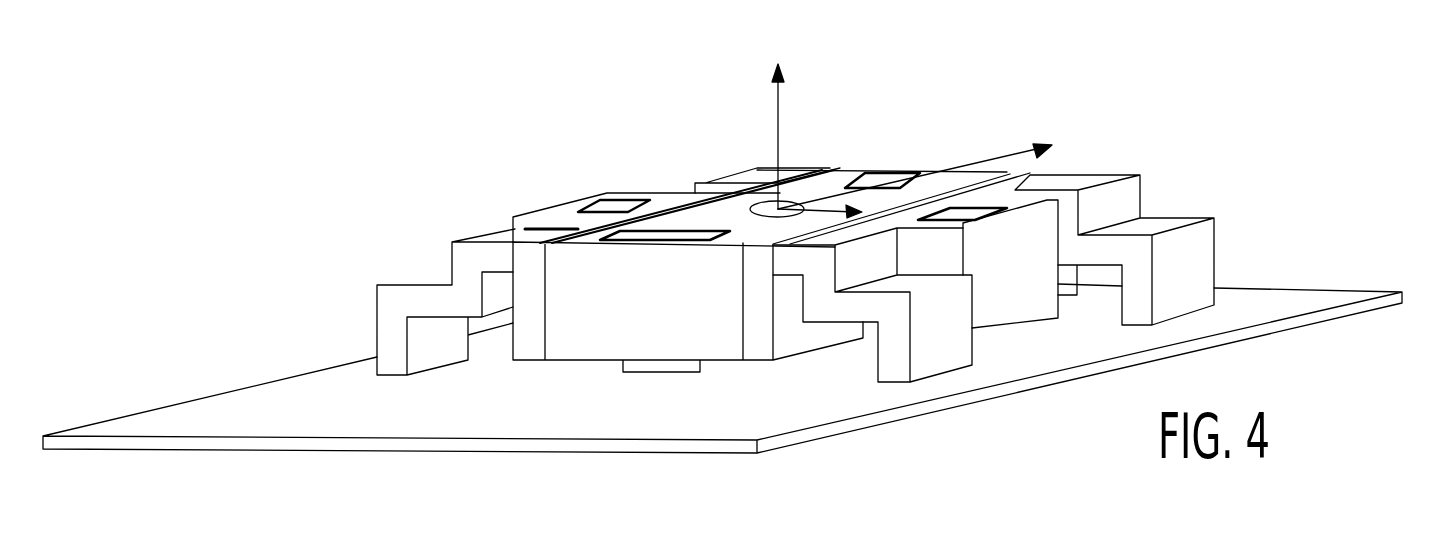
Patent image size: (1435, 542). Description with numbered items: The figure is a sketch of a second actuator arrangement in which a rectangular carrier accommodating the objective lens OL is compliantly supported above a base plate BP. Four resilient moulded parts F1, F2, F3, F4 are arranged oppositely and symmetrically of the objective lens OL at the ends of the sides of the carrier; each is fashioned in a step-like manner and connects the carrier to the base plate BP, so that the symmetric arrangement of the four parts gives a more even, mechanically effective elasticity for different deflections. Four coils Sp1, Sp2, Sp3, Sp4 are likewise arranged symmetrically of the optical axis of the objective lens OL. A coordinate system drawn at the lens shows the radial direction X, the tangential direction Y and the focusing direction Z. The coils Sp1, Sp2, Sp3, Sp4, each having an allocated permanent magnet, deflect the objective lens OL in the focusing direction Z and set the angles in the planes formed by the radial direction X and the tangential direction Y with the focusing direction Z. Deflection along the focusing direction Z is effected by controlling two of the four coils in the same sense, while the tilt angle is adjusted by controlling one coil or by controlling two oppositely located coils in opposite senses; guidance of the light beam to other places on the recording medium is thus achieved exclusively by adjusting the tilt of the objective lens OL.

The base plate BP is at (862, 405).
The coil Sp4 is at (578, 340).
The coil Sp1 is at (607, 195).
The coil Sp2 is at (1025, 314).
The coil Sp3 is at (890, 178).
The resilient moulded part F1 is at (495, 235).
The resilient moulded part F2 is at (750, 170).
The resilient moulded part F3 is at (1110, 175).
The resilient moulded part F4 is at (948, 366).
The objective lens OL is at (780, 203).
The radial direction X is at (856, 210).
The tangential direction Y is at (924, 169).
The focusing direction Z is at (777, 123).